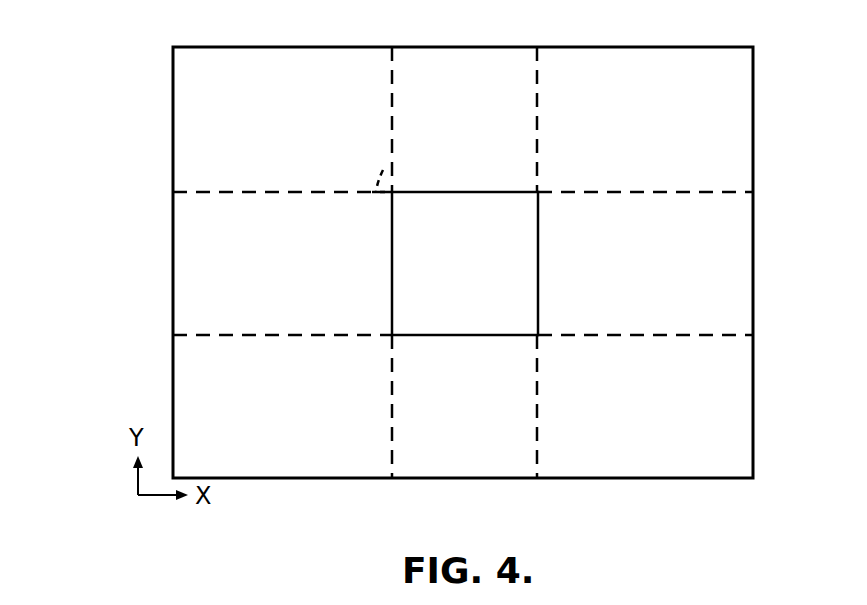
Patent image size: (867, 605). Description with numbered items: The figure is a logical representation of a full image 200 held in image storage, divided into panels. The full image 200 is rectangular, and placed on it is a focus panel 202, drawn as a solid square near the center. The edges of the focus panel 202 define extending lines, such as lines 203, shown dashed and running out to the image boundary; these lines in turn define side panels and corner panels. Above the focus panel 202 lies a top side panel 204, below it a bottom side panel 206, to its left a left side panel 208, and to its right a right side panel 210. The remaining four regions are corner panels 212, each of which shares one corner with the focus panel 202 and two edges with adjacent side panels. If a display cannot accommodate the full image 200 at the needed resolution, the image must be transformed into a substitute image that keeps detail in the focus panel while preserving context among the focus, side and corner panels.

The full image 200 is at (674, 49).
The focus panel 202 is at (518, 240).
The lines 203 is at (379, 165).
The top side panel 204 is at (478, 55).
The bottom side panel 206 is at (482, 463).
The left side panel 208 is at (190, 235).
The right side panel 210 is at (735, 242).
The corner panels 212 is at (186, 52).